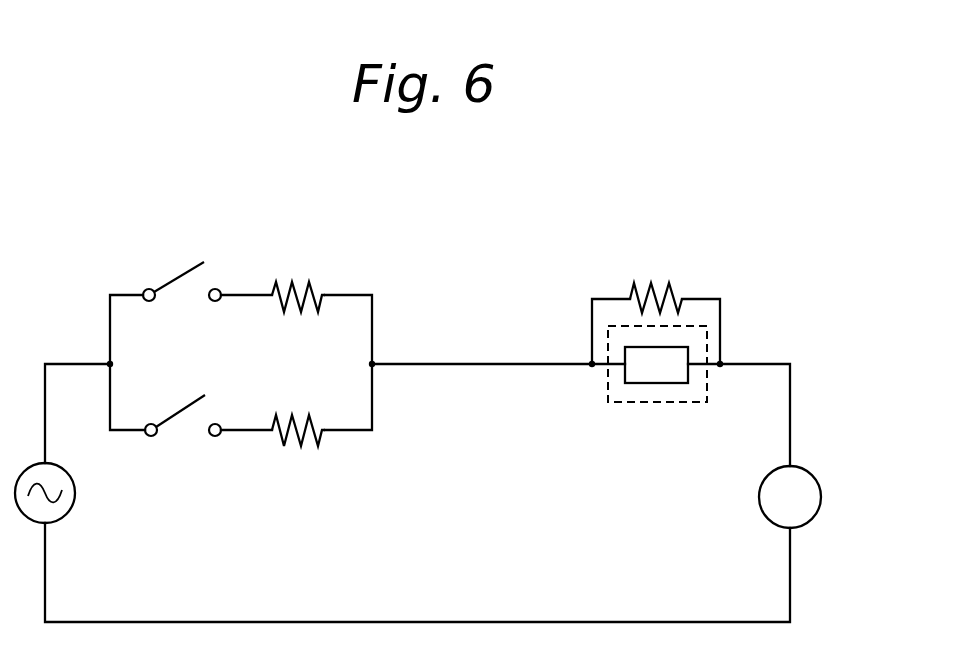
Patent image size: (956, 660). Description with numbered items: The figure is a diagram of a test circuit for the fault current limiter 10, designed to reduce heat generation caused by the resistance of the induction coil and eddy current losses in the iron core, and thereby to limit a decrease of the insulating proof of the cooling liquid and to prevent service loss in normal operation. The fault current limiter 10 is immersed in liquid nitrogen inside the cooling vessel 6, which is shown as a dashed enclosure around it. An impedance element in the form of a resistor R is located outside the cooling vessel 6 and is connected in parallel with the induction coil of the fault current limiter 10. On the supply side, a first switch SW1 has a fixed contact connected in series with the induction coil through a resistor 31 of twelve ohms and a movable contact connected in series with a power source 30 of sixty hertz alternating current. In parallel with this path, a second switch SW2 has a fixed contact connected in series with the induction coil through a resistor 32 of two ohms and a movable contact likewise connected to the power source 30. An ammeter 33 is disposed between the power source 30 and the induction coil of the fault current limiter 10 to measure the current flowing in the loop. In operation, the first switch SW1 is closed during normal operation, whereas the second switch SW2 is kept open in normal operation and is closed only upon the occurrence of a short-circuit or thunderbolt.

The power source 30 is at (72, 501).
The resistor 31 is at (310, 284).
The resistor 32 is at (311, 440).
The ammeter 33 is at (808, 475).
The fault current limiter 10 is at (645, 386).
The cooling vessel 6 is at (670, 402).
The resistor R is at (670, 285).
The first switch SW1 is at (172, 288).
The second switch SW2 is at (173, 418).